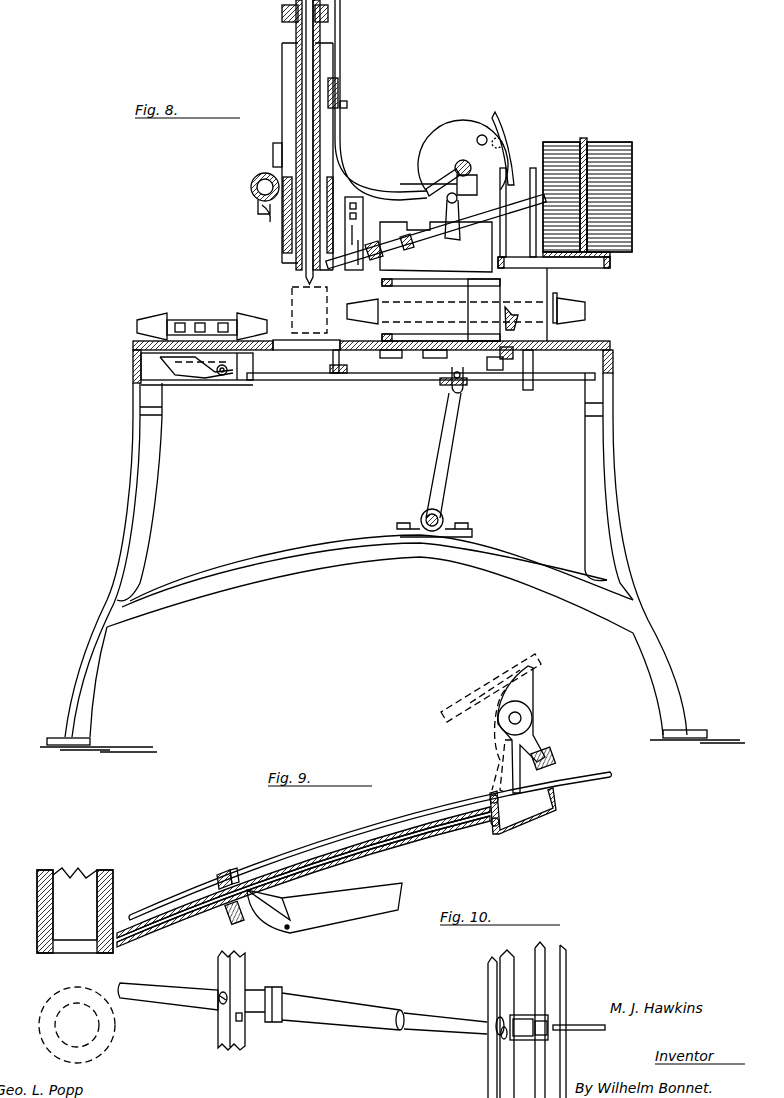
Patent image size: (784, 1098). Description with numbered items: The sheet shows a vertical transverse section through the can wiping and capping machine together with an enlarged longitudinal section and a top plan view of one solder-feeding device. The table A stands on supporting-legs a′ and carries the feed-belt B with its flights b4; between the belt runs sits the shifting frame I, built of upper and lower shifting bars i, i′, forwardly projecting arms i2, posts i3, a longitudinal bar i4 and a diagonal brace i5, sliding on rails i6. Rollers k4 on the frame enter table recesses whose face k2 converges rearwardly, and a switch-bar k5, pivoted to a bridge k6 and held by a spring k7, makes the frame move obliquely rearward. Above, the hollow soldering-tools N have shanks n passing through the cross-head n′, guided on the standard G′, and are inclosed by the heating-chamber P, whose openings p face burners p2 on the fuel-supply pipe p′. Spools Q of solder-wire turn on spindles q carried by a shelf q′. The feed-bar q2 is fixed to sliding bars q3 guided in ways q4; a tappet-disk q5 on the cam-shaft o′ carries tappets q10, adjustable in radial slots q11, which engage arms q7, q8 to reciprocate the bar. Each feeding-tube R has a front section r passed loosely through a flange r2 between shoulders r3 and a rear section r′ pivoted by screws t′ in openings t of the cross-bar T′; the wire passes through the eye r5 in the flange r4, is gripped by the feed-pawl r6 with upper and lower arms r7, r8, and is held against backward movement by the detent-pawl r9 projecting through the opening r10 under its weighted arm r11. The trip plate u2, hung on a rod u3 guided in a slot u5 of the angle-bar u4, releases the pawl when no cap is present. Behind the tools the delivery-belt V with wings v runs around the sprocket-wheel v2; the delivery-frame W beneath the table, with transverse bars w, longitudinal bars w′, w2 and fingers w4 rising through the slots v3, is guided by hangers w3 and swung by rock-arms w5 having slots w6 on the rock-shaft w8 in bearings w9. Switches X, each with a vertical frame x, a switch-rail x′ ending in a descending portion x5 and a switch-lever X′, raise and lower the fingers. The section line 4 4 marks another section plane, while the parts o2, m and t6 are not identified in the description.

In FIG. 8, the cross-head n′ is at (282, 18).
In FIG. 8, the delivery-belt V is at (297, 46).
In FIG. 8, the standard G′ is at (282, 84).
In FIG. 8, the hollow shank n is at (306, 116).
In FIG. 8, the depending rod u3 is at (341, 58).
In FIG. 8, the angle-bar u4 is at (339, 86).
In FIG. 8, the slots u5 is at (348, 106).
In FIG. 8, the heating-chamber P is at (341, 172).
In FIG. 8, the fuel-supply pipe p′ is at (251, 186).
In FIG. 8, the burners p2 is at (258, 214).
In FIG. 8, the opening p is at (283, 240).
In FIG. 8, the soldering-tools N is at (296, 272).
In FIG. 9, the soldering-tools N is at (37, 918).
In FIG. 10, the soldering-tools N is at (77, 1025).
In FIG. 8, the bracket t6 is at (349, 226).
In FIG. 8, the section line 4 is at (362, 232).
In FIG. 8, the tappet-disk q5 is at (441, 131).
In FIG. 8, the rear arm q8 is at (437, 158).
In FIG. 8, the radial slots q11 is at (468, 134).
In FIG. 8, the tappets q10 is at (484, 135).
In FIG. 8, the front arm q7 is at (499, 121).
In FIG. 8, the shaft o2 is at (463, 159).
In FIG. 8, the cam-shaft o′ is at (471, 169).
In FIG. 8, the trip plate u2 is at (445, 178).
In FIG. 9, the trip plate u2 is at (466, 702).
In FIG. 8, the vertical spindles q is at (588, 138).
In FIG. 8, the spools of solder-wire Q is at (599, 197).
In FIG. 8, the shelf q′ is at (612, 263).
In FIG. 8, the solder-feed pawl r6 is at (449, 202).
In FIG. 9, the solder-feed pawl r6 is at (498, 732).
In FIG. 8, the feeding-tubes R is at (436, 231).
In FIG. 9, the feeding-tubes R is at (343, 828).
In FIG. 10, the feeding-tubes R is at (324, 1004).
In FIG. 8, the detent-pawl r9 is at (376, 270).
In FIG. 9, the detent-pawl r9 is at (283, 930).
In FIG. 8, the rear tube-section r′ is at (345, 287).
In FIG. 9, the rear tube-section r′ is at (170, 908).
In FIG. 10, the rear tube-section r′ is at (168, 996).
In FIG. 8, the sliding bars q3 is at (436, 248).
In FIG. 8, the ways q4 is at (415, 266).
In FIG. 8, the feed-bar q2 is at (453, 236).
In FIG. 9, the feed-bar q2 is at (537, 816).
In FIG. 10, the feed-bar q2 is at (533, 1021).
In FIG. 8, the shifting frame I is at (463, 310).
In FIG. 8, the upper shifting bar i is at (400, 297).
In FIG. 8, the arms i2 is at (417, 306).
In FIG. 8, the posts i3 is at (469, 296).
In FIG. 8, the lower shifting bar i′ is at (374, 312).
In FIG. 8, the diagonal brace i5 is at (512, 309).
In FIG. 8, the longitudinal bar i4 is at (527, 308).
In FIG. 8, the feed-belt B is at (559, 301).
In FIG. 8, the flights b4 is at (580, 306).
In FIG. 8, the mold m is at (309, 310).
In FIG. 8, the wings v is at (137, 333).
In FIG. 8, the sprocket-wheel v2 is at (183, 317).
In FIG. 8, the vertical frame x is at (133, 357).
In FIG. 8, the table A is at (612, 345).
In FIG. 8, the transverse slots v3 is at (306, 352).
In FIG. 8, the fingers w4 is at (333, 358).
In FIG. 8, the switches X is at (180, 360).
In FIG. 8, the rear descending portion x5 is at (222, 376).
In FIG. 8, the switch-rail x′ is at (178, 385).
In FIG. 8, the switch-lever X′ is at (220, 380).
In FIG. 8, the hangers w3 is at (252, 385).
In FIG. 8, the transverse bars w is at (275, 381).
In FIG. 8, the shifting delivery-frame W is at (421, 387).
In FIG. 8, the rear longitudinal bar w2 is at (334, 381).
In FIG. 8, the rails i6 is at (474, 360).
In FIG. 8, the recess face k2 is at (422, 358).
In FIG. 8, the rollers k4 is at (510, 352).
In FIG. 8, the bridge k6 is at (396, 380).
In FIG. 8, the switch-bar k5 is at (440, 382).
In FIG. 8, the spring k7 is at (494, 372).
In FIG. 8, the front longitudinal bar w′ is at (445, 385).
In FIG. 8, the slots w6 is at (460, 393).
In FIG. 8, the rock-arms w5 is at (445, 486).
In FIG. 8, the rock-shaft w8 is at (420, 514).
In FIG. 8, the bearings w9 is at (450, 521).
In FIG. 8, the supporting-legs a′ is at (640, 582).
In FIG. 9, the front tube-section r is at (428, 818).
In FIG. 10, the front tube-section r is at (445, 1023).
In FIG. 9, the openings t is at (235, 872).
In FIG. 10, the openings t is at (243, 1021).
In FIG. 9, the screws t′ is at (222, 870).
In FIG. 10, the screws t′ is at (220, 994).
In FIG. 9, the cross-bar T′ is at (227, 916).
In FIG. 10, the cross-bar T′ is at (218, 1033).
In FIG. 9, the weighted arm r11 is at (324, 908).
In FIG. 9, the opening r10 is at (250, 915).
In FIG. 9, the front flange r4 is at (550, 756).
In FIG. 10, the front flange r4 is at (545, 982).
In FIG. 9, the eye r5 is at (556, 784).
In FIG. 10, the eye r5 is at (558, 1022).
In FIG. 9, the upper arm r7 is at (533, 682).
In FIG. 10, the upper arm r7 is at (530, 1042).
In FIG. 9, the lower arm r8 is at (510, 770).
In FIG. 9, the shoulders r3 is at (490, 794).
In FIG. 10, the shoulders r3 is at (492, 1020).
In FIG. 9, the rear flange r2 is at (498, 826).
In FIG. 10, the rear flange r2 is at (488, 1068).